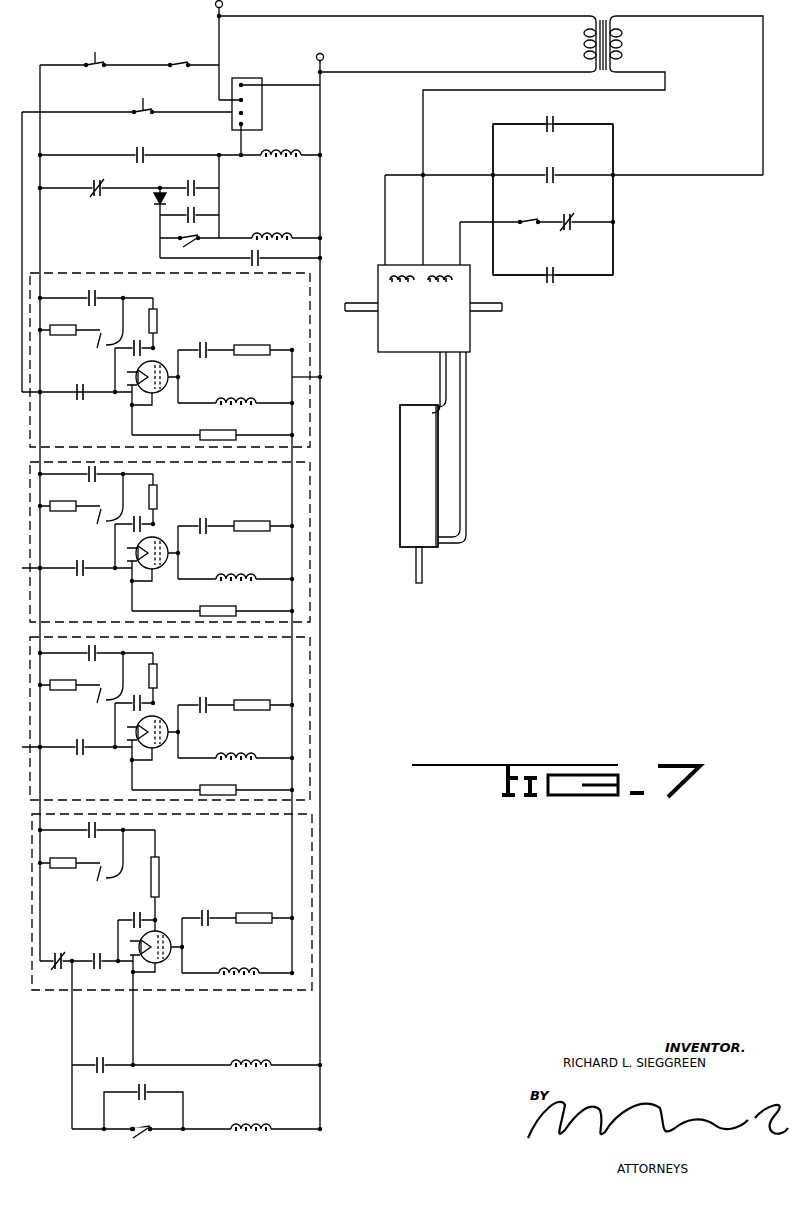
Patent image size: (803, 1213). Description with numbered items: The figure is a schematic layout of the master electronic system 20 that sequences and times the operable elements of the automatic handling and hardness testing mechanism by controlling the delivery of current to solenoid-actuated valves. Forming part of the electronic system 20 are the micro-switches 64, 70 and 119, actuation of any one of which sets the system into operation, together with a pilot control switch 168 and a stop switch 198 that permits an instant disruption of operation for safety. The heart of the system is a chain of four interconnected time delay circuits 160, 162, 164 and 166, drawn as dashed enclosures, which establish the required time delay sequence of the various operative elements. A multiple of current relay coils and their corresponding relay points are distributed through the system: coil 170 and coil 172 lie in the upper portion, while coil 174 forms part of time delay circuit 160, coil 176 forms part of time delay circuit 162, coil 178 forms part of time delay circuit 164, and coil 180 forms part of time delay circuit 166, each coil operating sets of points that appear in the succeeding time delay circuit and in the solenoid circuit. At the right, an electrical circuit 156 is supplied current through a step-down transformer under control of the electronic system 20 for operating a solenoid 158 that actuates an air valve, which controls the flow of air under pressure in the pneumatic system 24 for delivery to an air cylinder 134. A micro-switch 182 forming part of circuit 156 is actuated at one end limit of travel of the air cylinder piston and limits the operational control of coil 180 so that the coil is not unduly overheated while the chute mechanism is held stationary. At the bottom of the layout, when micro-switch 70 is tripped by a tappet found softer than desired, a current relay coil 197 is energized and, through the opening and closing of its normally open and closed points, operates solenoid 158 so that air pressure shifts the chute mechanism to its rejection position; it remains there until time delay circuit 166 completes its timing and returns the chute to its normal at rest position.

The master electronic system 20 is at (377, 684).
The pneumatic system 24 is at (388, 479).
The micro-switch 64 is at (183, 247).
The micro-switch 70 is at (142, 1133).
The micro-switch 119 is at (178, 63).
The air cylinder 134 is at (417, 525).
The electrical circuit 156 is at (627, 210).
The solenoid 158 is at (428, 286).
The time delay circuit 160 is at (325, 287).
The time delay circuit 162 is at (303, 483).
The time delay circuit 164 is at (303, 757).
The time delay circuit 166 is at (305, 876).
The pilot control switch 168 is at (152, 112).
The current relay coil 170 is at (282, 151).
The current relay coil 172 is at (275, 233).
The current relay coil 174 is at (226, 400).
The current relay coil 176 is at (232, 576).
The current relay coil 178 is at (233, 756).
The current relay coil 180 is at (238, 968).
The micro-switch 182 is at (530, 220).
The current relay coil 197 is at (262, 1113).
The stop switch 198 is at (100, 64).